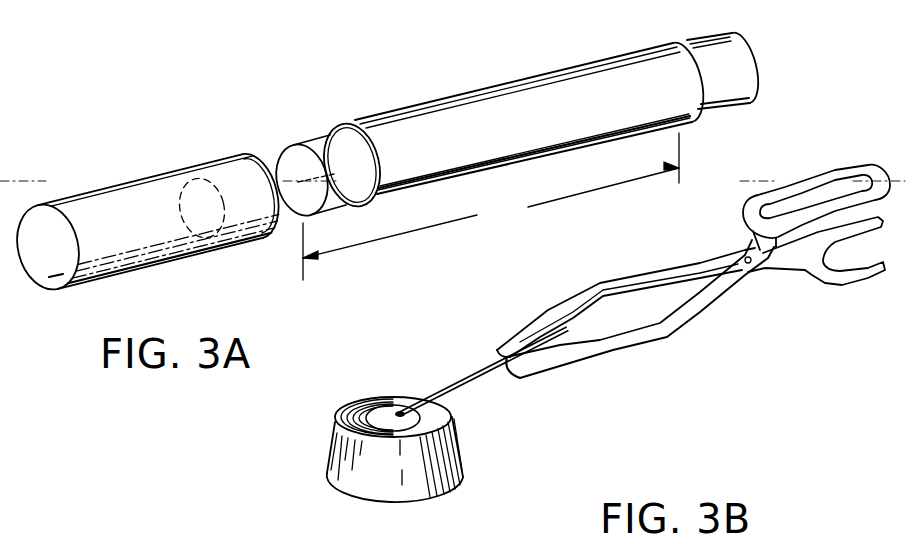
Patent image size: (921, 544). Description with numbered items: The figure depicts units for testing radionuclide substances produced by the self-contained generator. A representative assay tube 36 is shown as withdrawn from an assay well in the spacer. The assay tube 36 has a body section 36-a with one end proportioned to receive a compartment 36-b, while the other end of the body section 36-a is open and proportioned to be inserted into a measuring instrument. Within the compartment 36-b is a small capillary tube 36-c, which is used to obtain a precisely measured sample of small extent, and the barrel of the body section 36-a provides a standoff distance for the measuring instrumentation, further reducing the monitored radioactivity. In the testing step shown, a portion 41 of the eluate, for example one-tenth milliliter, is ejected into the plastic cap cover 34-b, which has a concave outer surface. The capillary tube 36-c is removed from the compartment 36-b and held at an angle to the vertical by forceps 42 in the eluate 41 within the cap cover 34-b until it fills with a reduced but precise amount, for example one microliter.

In FIG. 3A, the assay tube 36 is at (368, 113).
In FIG. 3A, the body section 36-a is at (521, 74).
In FIG. 3A, the compartment 36-b is at (157, 172).
In FIG. 3A, the capillary tube 36-c is at (151, 268).
In FIG. 3B, the capillary tube 36-c is at (468, 377).
In FIG. 3B, the portion of the eluate 41 is at (360, 397).
In FIG. 3B, the forceps 42 is at (641, 343).
In FIG. 3B, the cap cover 34-b is at (553, 426).